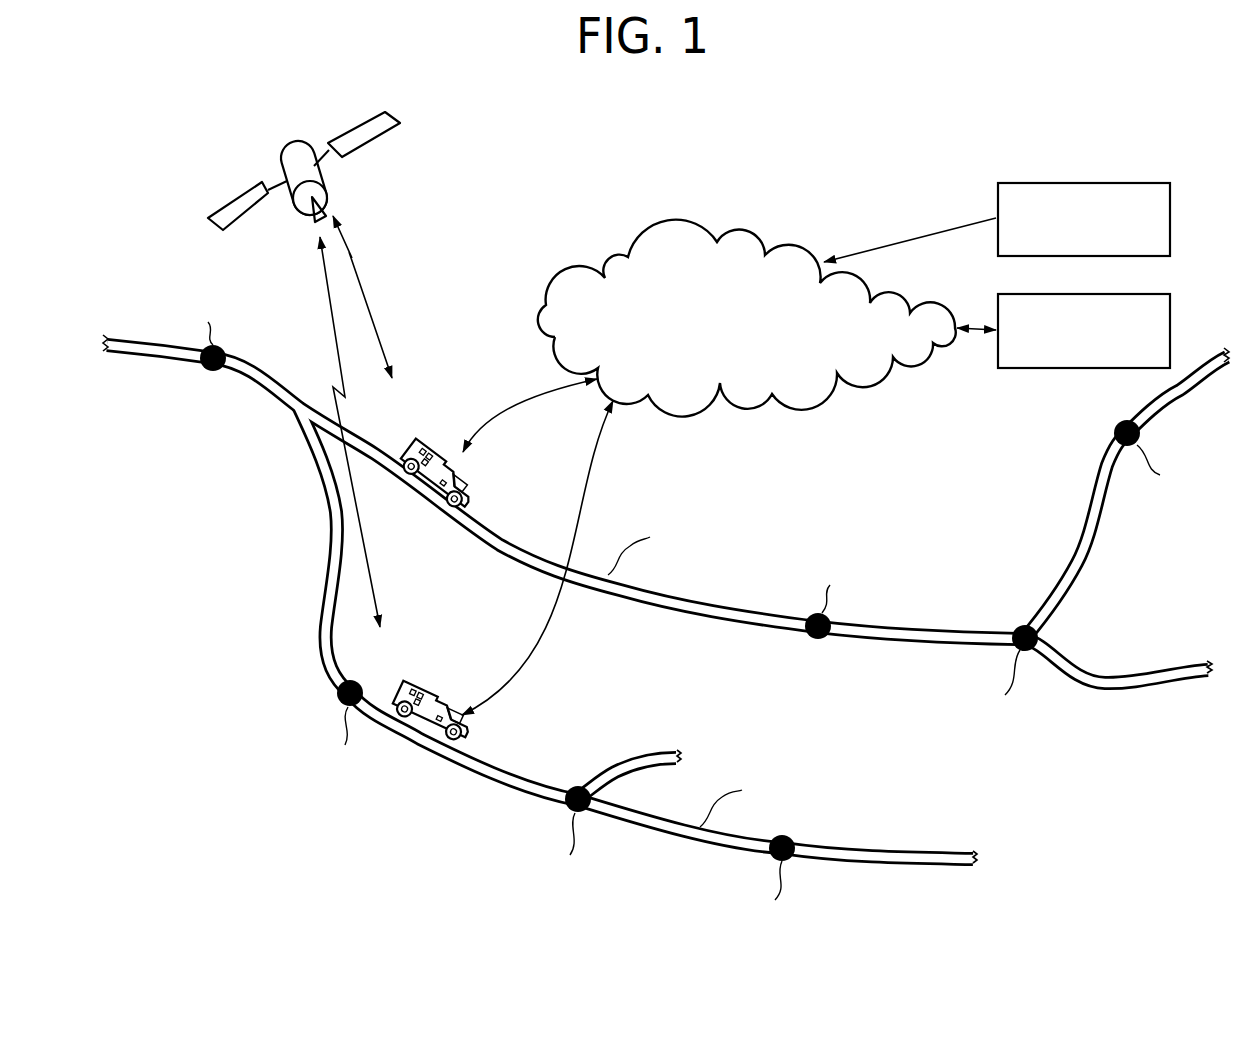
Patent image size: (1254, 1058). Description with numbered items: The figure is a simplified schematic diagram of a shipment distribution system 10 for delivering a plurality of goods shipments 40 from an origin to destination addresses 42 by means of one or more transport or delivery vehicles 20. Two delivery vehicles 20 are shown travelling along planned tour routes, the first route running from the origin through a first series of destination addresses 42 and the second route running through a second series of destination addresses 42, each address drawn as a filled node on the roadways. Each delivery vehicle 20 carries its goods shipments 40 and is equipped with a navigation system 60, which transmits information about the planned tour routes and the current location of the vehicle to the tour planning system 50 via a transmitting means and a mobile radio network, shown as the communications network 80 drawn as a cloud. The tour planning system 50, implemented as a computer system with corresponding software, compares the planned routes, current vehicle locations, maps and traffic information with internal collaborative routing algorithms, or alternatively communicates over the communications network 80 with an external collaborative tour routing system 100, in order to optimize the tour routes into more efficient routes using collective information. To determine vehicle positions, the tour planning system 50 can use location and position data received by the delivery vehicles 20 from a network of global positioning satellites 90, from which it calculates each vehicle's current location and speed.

The shipment distribution system 10 is at (1086, 793).
The delivery vehicle 20 is at (405, 433).
The goods shipment 40 is at (433, 443).
The destination address 42 is at (991, 658).
The tour planning system 50 is at (1172, 196).
The navigation system 60 is at (433, 486).
The communications network 80 is at (698, 222).
The global positioning satellites 90 is at (283, 165).
The external collaborative tour routing system 100 is at (1172, 310).